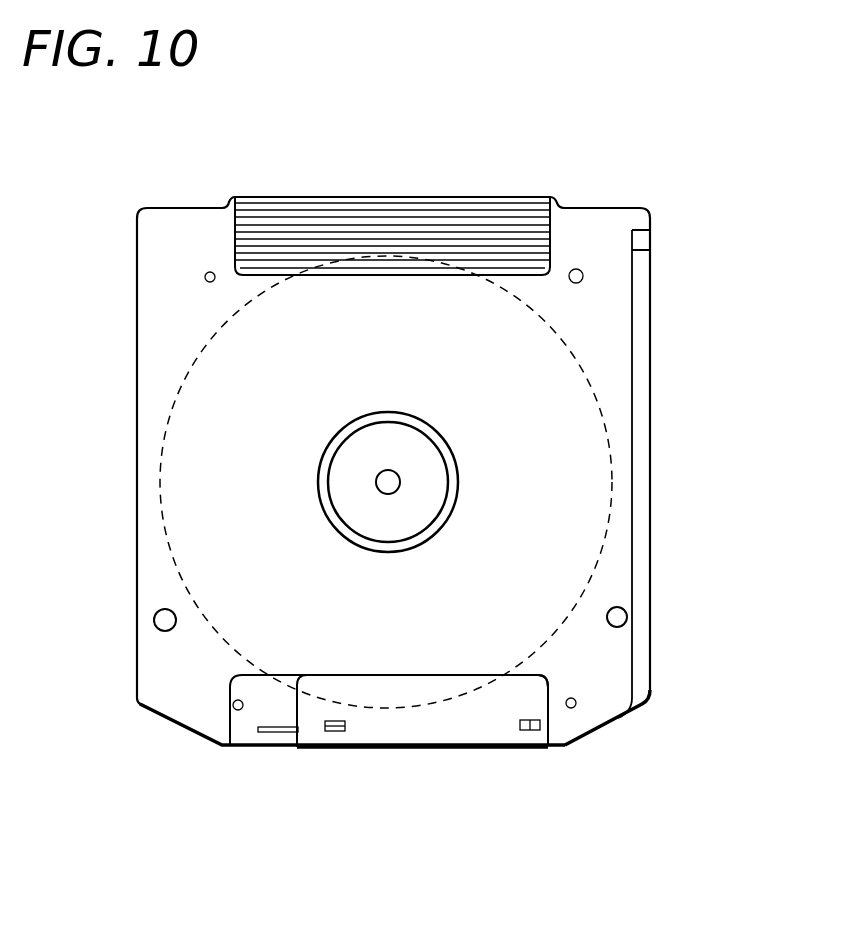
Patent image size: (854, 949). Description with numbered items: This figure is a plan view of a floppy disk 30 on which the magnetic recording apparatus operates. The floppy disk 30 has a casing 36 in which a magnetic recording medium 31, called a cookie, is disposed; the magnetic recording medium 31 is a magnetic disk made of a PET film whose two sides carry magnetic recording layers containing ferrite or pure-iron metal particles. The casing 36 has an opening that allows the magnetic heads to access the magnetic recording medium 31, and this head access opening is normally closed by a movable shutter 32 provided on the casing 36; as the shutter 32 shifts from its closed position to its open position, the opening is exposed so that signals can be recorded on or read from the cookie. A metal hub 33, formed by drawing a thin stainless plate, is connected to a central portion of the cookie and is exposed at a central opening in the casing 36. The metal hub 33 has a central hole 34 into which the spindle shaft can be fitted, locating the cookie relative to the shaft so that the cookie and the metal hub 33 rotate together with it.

The floppy disk 30 is at (489, 178).
The magnetic recording medium 31 is at (573, 403).
The shutter 32 is at (405, 730).
The metal hub 33 is at (427, 458).
The central hole 34 is at (376, 485).
The casing 36 is at (606, 700).